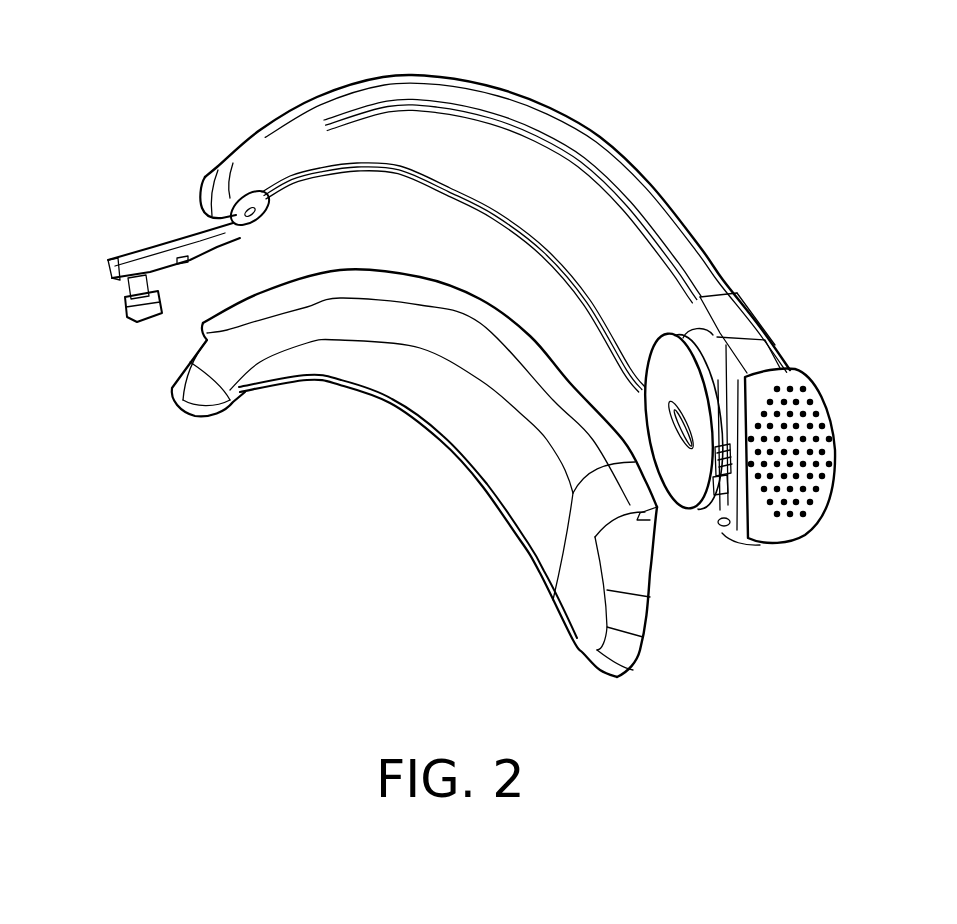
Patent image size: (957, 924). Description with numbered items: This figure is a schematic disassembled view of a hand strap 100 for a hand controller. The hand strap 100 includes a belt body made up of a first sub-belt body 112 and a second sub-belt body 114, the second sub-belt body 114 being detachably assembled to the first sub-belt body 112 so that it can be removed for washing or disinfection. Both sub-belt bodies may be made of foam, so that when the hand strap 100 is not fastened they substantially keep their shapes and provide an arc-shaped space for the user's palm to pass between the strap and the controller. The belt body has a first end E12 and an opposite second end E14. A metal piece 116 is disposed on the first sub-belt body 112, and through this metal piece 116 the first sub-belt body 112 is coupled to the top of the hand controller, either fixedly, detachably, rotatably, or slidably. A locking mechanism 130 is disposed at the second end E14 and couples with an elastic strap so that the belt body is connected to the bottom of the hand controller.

The hand strap 100 is at (855, 701).
The first sub-belt body 112 is at (570, 133).
The second sub-belt body 114 is at (465, 430).
The metal piece 116 is at (113, 260).
The locking mechanism 130 is at (685, 477).
The first end E12 is at (210, 187).
The second end E14 is at (725, 313).